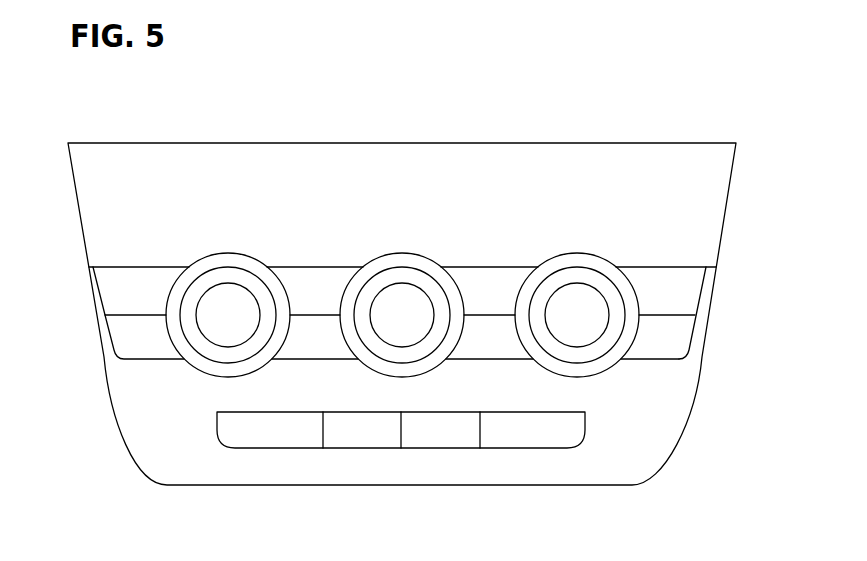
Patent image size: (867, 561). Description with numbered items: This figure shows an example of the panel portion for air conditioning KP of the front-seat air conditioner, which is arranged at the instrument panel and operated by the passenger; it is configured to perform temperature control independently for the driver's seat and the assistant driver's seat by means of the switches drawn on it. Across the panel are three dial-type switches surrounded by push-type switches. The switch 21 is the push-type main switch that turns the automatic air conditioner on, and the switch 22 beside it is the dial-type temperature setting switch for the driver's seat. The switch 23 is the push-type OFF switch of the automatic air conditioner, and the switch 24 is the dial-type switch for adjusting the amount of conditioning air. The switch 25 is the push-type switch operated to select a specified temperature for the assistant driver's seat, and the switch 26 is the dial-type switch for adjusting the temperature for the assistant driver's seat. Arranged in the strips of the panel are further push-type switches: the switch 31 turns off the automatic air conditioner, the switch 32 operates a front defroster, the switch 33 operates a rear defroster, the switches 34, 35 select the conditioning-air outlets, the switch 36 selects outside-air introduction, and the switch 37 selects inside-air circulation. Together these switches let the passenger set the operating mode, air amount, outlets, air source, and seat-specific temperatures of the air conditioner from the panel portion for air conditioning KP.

The panel portion for air conditioning KP is at (584, 56).
The switch 31 is at (688, 293).
The switch 21 is at (573, 303).
The switch 22 is at (597, 280).
The switch 23 is at (398, 303).
The switch 24 is at (419, 280).
The switch 25 is at (223, 302).
The switch 26 is at (245, 280).
The switch 32 is at (480, 278).
The switch 33 is at (480, 345).
The switch 34 is at (305, 278).
The switch 35 is at (312, 352).
The switch 36 is at (138, 282).
The switch 37 is at (143, 350).